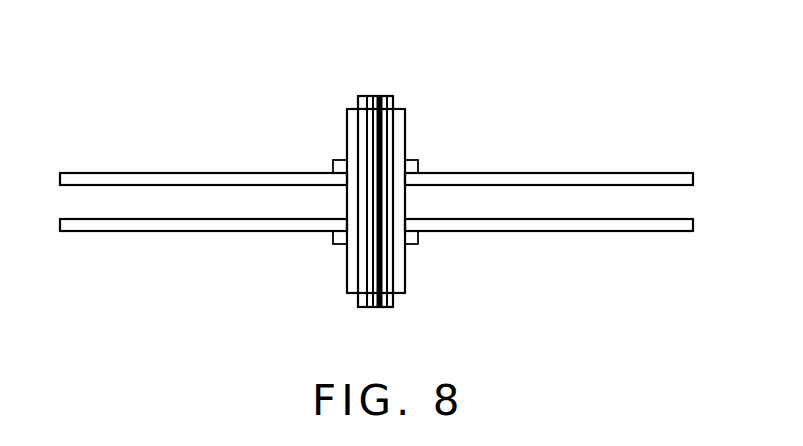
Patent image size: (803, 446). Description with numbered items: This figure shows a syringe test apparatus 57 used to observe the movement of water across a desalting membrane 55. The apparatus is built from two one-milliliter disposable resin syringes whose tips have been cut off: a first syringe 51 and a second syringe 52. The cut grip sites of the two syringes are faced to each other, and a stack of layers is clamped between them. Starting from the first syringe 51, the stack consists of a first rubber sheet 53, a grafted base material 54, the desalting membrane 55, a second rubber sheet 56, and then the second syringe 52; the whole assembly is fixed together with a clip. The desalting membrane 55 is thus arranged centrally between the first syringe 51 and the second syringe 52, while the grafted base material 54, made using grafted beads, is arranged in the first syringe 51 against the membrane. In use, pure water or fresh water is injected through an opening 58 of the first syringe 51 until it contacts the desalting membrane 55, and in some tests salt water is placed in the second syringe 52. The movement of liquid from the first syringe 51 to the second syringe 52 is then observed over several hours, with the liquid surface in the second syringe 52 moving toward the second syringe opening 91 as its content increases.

The first syringe 51 is at (169, 232).
The second syringe 52 is at (564, 232).
The first rubber sheet 53 is at (358, 103).
The grafted base material 54 is at (372, 96).
The desalting membrane 55 is at (380, 96).
The second rubber sheet 56 is at (393, 103).
The syringe test apparatus 57 is at (555, 110).
The opening of the first syringe 58 is at (67, 204).
The second syringe opening 91 is at (690, 203).